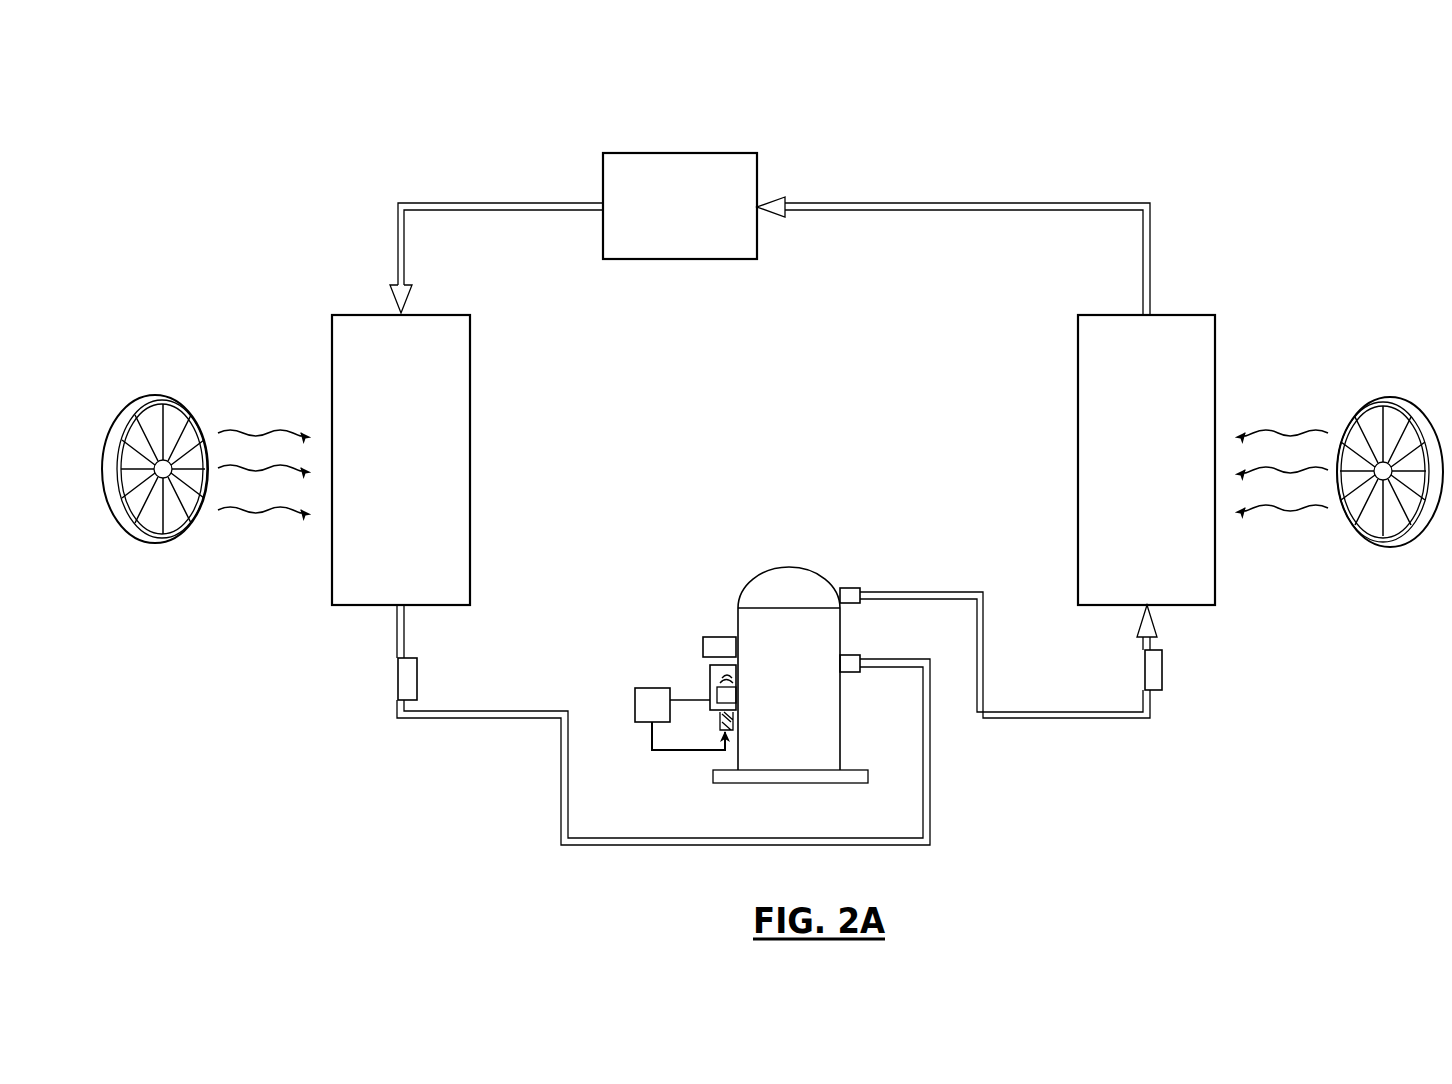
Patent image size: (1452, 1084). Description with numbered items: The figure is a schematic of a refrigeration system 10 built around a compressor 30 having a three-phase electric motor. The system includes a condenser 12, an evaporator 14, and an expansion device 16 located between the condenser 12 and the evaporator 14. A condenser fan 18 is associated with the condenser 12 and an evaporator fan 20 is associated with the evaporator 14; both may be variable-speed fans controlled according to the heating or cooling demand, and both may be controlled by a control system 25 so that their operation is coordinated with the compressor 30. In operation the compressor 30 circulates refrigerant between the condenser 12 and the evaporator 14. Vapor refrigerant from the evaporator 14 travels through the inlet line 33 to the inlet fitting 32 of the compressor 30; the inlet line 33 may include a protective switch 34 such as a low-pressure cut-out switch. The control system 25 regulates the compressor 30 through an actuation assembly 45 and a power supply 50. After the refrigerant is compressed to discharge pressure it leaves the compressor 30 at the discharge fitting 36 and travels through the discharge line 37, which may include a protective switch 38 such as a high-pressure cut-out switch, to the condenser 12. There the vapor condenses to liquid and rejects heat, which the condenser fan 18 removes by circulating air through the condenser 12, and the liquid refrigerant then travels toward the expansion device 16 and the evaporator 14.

The refrigeration system 10 is at (1010, 148).
The condenser 12 is at (1188, 315).
The evaporator 14 is at (352, 315).
The expansion device 16 is at (680, 153).
The condenser fan 18 is at (1425, 404).
The evaporator fan 20 is at (125, 404).
The control system 25 is at (705, 675).
The compressor 30 is at (758, 565).
The inlet fitting 32 is at (848, 656).
The inlet line 33 is at (487, 718).
The protective switch 34 is at (417, 680).
The discharge fitting 36 is at (851, 588).
The discharge line 37 is at (1085, 720).
The protective switch 38 is at (1162, 670).
The actuation assembly 45 is at (700, 648).
The power supply 50 is at (635, 700).